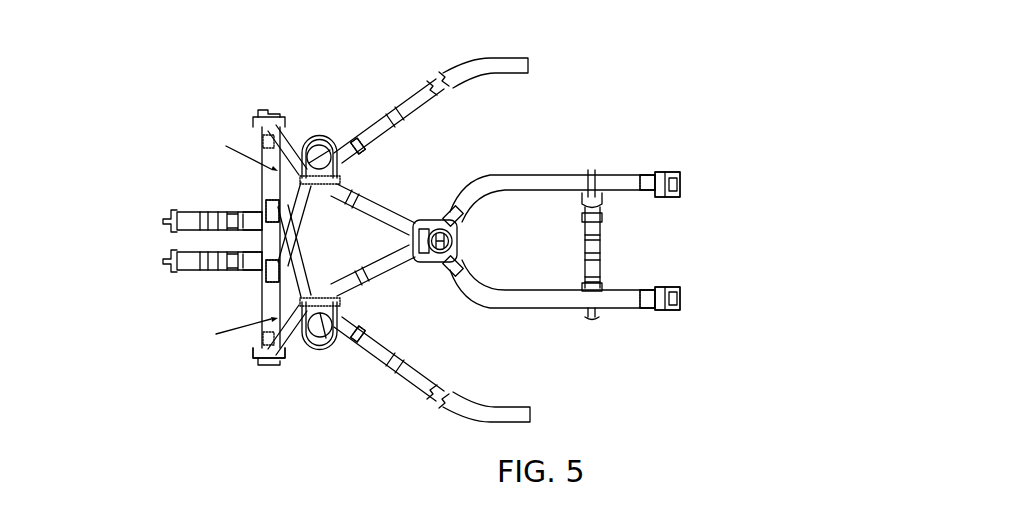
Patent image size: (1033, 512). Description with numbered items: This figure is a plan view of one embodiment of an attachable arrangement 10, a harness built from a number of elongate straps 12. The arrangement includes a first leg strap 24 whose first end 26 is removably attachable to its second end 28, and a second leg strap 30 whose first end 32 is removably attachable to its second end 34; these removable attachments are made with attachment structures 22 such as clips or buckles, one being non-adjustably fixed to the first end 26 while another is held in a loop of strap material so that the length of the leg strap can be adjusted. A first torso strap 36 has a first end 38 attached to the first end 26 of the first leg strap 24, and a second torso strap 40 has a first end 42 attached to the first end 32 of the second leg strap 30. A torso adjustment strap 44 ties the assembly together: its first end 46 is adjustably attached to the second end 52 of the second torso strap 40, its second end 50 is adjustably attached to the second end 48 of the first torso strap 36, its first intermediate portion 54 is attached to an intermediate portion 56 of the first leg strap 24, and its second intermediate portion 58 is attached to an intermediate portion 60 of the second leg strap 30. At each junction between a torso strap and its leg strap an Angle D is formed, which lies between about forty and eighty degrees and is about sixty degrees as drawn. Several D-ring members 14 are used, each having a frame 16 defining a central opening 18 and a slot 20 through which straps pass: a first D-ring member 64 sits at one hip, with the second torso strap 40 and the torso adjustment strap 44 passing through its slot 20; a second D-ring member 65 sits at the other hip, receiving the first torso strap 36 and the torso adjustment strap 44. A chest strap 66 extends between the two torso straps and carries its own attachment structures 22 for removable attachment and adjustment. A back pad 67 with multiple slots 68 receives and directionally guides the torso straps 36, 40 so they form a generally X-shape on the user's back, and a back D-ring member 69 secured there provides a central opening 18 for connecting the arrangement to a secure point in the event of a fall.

The attachable arrangement 10 is at (130, 200).
The elongate strap 12 is at (350, 378).
The D-ring member 14 is at (368, 86).
The frame 16 is at (329, 130).
The central opening 18 is at (333, 166).
The slot 20 is at (344, 181).
The attachment structure 22 is at (266, 124).
The first leg strap 24 is at (246, 211).
The first end of the first leg strap 26 is at (250, 151).
The second end of the first leg strap 28 is at (182, 204).
The second leg strap 30 is at (250, 270).
The first end of the second leg strap 32 is at (259, 355).
The second end of the second leg strap 34 is at (190, 278).
The first torso strap 36 is at (370, 194).
The first end of the first torso strap 38 is at (283, 134).
The second torso strap 40 is at (380, 280).
The first end of the second torso strap 42 is at (252, 346).
The torso adjustment strap 44 is at (420, 122).
The first end of the torso adjustment strap 46 is at (520, 74).
The second end of the first torso strap 48 is at (659, 318).
The second end of the torso adjustment strap 50 is at (512, 413).
The second end of the second torso strap 52 is at (663, 164).
The first intermediate portion of the torso adjustment strap 54 is at (294, 213).
The intermediate portion of the first leg strap 56 is at (256, 204).
The second intermediate portion of the torso adjustment strap 58 is at (296, 261).
The intermediate portion of the second leg strap 60 is at (254, 292).
The first D-ring member 64 is at (343, 352).
The second D-ring member 65 is at (310, 128).
The chest strap 66 is at (583, 247).
The back pad 67 is at (464, 184).
The slot of the back pad 68 is at (436, 214).
The back D-ring member 69 is at (470, 224).
The Angle D is at (239, 239).